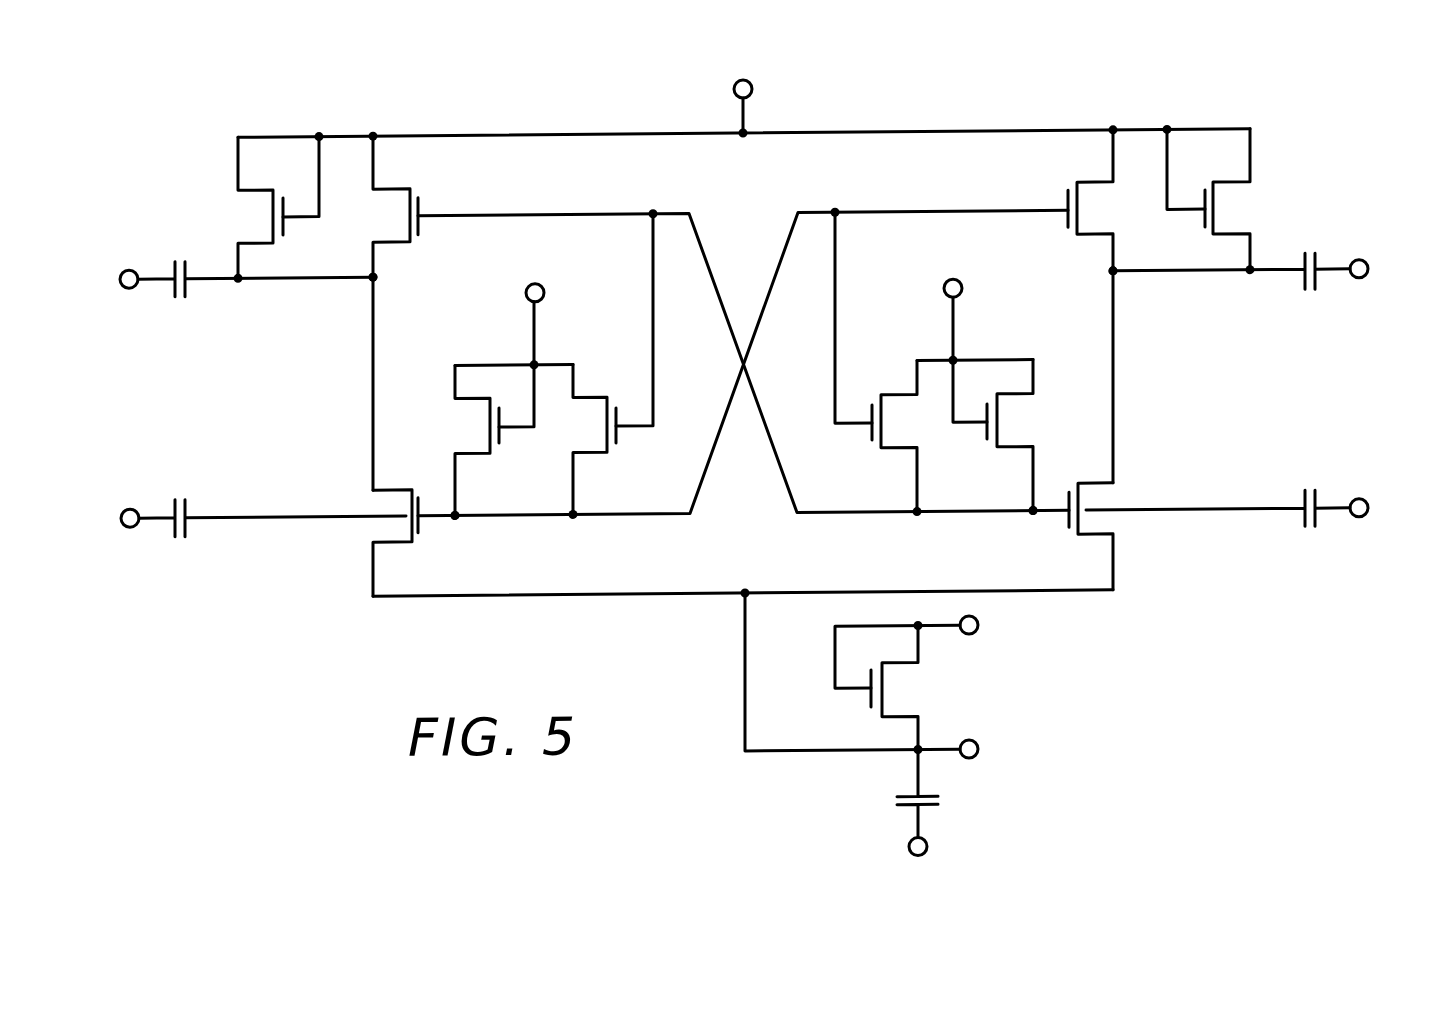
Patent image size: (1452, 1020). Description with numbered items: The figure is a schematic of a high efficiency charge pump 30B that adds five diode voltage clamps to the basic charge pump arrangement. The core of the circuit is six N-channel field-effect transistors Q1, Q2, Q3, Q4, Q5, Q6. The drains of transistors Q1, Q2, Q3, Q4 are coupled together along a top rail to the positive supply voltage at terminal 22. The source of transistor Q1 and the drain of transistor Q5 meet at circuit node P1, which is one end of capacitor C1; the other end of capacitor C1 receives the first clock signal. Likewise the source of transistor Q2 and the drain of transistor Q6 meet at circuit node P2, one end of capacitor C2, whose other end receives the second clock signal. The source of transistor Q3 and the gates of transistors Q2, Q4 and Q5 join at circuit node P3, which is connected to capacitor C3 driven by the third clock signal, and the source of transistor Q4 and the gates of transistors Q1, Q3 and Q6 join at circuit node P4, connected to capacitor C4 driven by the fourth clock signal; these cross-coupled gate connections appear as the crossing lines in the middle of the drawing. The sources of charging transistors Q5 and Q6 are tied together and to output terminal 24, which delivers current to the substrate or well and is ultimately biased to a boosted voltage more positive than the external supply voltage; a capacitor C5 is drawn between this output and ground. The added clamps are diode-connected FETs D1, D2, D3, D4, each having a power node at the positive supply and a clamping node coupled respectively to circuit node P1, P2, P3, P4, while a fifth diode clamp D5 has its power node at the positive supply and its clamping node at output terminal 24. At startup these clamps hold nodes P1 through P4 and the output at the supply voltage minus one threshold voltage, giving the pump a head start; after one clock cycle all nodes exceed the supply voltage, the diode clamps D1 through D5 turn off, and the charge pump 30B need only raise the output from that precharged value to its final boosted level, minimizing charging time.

The charge pump 30B is at (746, 466).
The terminal 22 is at (752, 91).
The output terminal 24 is at (968, 742).
The transistor Q1 is at (707, 323).
The transistor Q2 is at (780, 323).
The transistor Q3 is at (602, 364).
The transistor Q4 is at (886, 361).
The transistor Q5 is at (401, 543).
The transistor Q6 is at (1086, 536).
The diode clamp D1 is at (268, 208).
The diode clamp D2 is at (1223, 199).
The diode clamp D3 is at (463, 440).
The diode clamp D4 is at (1023, 435).
The diode clamp D5 is at (942, 680).
The capacitor C1 is at (229, 263).
The capacitor C2 is at (1263, 255).
The capacitor C3 is at (243, 502).
The capacitor C4 is at (1249, 496).
The capacitor C5 is at (934, 820).
The circuit node P1 is at (377, 273).
The circuit node P2 is at (1113, 274).
The circuit node P3 is at (456, 515).
The circuit node P4 is at (1033, 516).